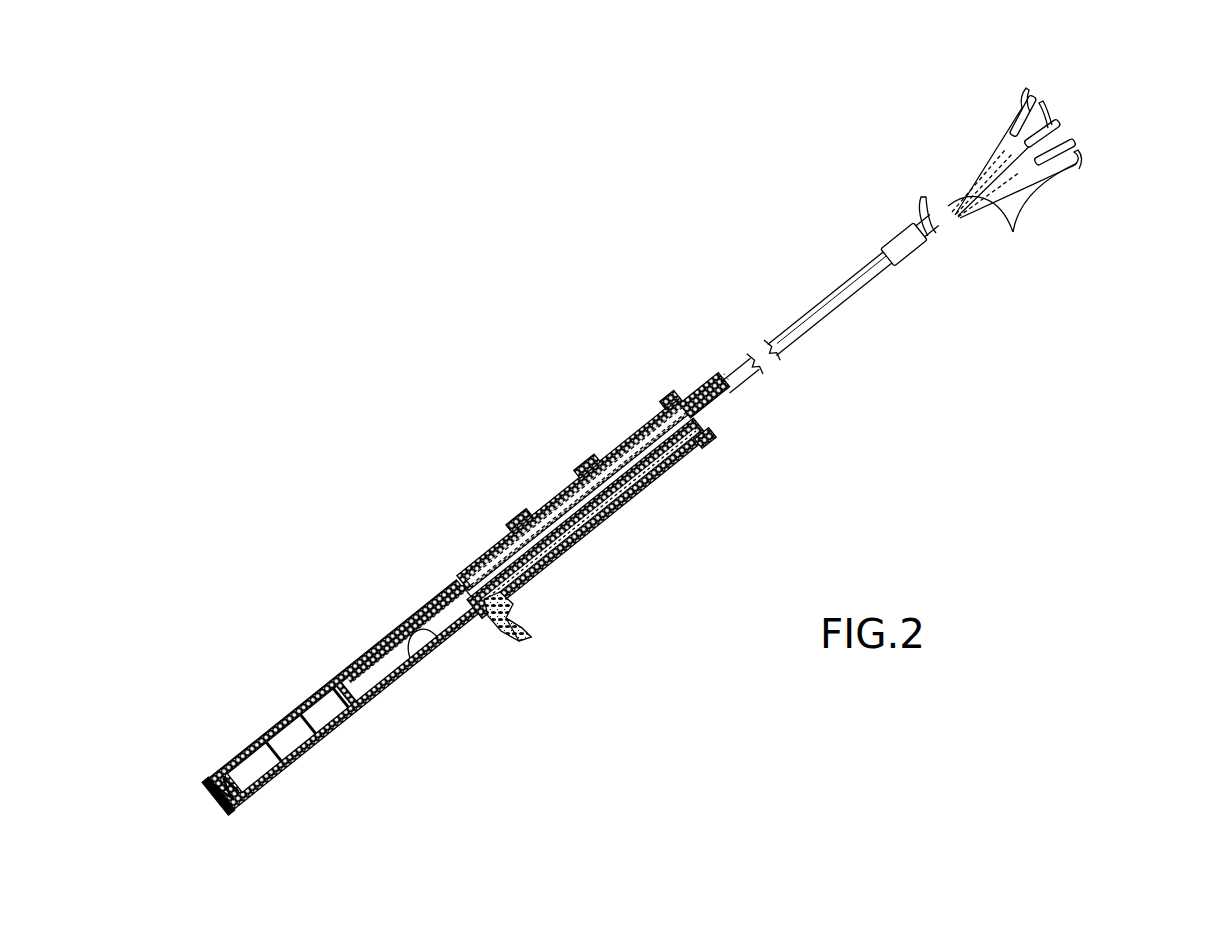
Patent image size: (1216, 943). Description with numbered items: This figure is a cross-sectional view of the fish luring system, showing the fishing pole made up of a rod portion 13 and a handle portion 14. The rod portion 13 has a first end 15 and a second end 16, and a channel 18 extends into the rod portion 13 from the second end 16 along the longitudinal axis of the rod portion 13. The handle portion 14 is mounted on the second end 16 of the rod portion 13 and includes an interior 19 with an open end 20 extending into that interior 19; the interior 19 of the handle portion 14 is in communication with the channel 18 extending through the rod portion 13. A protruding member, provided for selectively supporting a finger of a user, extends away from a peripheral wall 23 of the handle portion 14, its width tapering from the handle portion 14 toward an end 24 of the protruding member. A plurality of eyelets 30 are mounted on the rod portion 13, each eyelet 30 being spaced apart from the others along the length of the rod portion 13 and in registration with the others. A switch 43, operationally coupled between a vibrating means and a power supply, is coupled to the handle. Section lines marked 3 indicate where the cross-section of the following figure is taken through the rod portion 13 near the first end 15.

The section line 3- 3 is at (1053, 87).
The rod portion 13 is at (796, 332).
The handle portion 14 is at (305, 700).
The first end 15 is at (1055, 127).
The second end 16 is at (421, 645).
The channel 18 is at (715, 390).
The interior 19 is at (482, 568).
The open end 20 is at (214, 796).
The peripheral wall 23 is at (570, 540).
The end 24 is at (490, 606).
The eyelets 30 is at (1013, 232).
The switch 43 is at (525, 618).